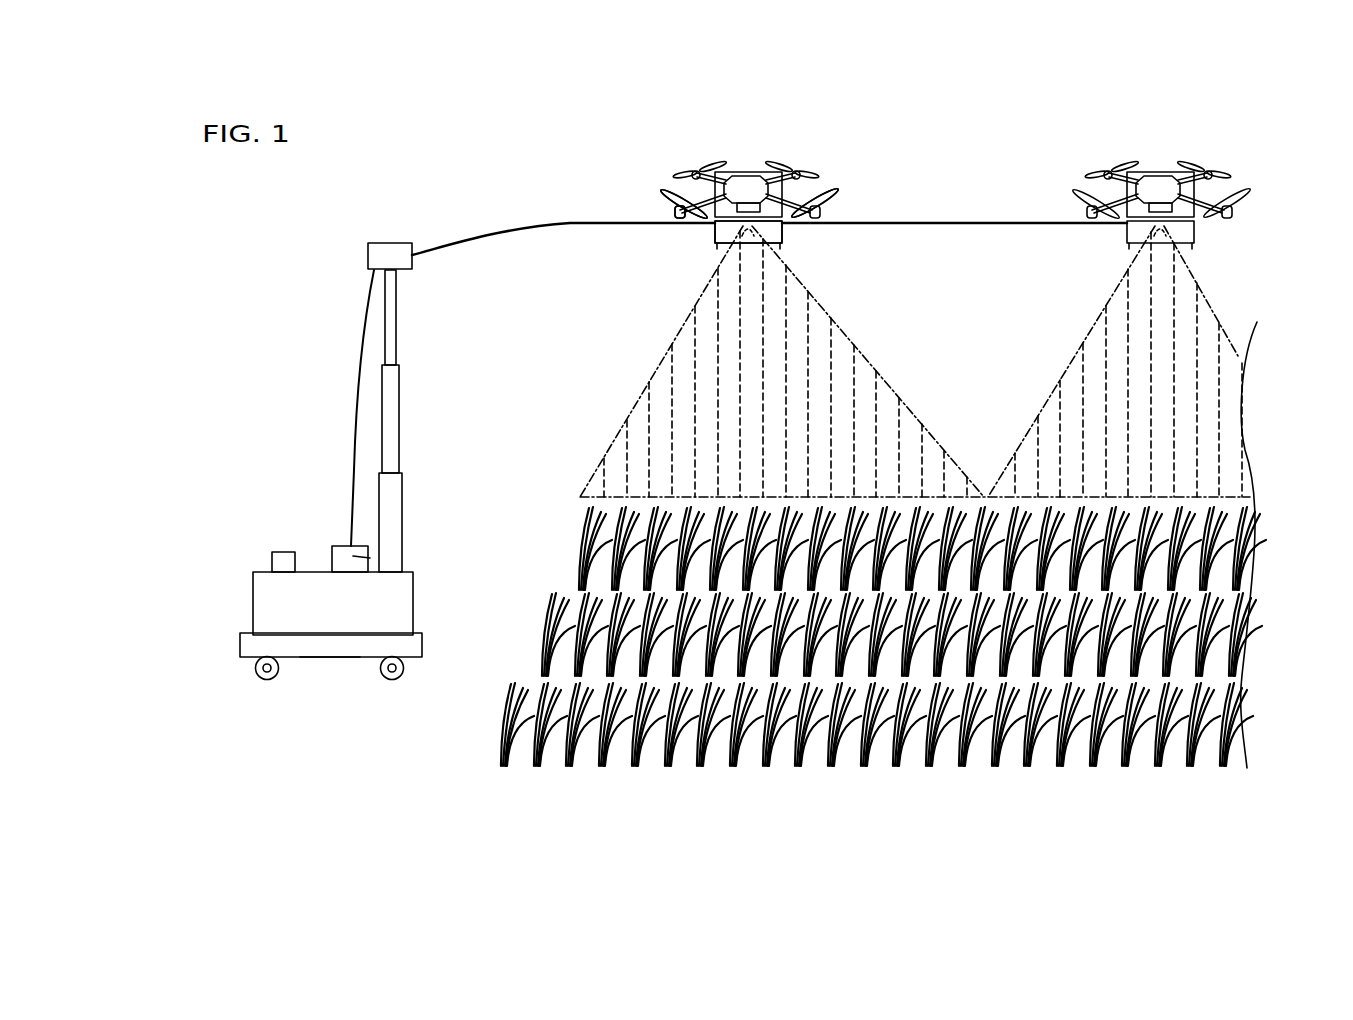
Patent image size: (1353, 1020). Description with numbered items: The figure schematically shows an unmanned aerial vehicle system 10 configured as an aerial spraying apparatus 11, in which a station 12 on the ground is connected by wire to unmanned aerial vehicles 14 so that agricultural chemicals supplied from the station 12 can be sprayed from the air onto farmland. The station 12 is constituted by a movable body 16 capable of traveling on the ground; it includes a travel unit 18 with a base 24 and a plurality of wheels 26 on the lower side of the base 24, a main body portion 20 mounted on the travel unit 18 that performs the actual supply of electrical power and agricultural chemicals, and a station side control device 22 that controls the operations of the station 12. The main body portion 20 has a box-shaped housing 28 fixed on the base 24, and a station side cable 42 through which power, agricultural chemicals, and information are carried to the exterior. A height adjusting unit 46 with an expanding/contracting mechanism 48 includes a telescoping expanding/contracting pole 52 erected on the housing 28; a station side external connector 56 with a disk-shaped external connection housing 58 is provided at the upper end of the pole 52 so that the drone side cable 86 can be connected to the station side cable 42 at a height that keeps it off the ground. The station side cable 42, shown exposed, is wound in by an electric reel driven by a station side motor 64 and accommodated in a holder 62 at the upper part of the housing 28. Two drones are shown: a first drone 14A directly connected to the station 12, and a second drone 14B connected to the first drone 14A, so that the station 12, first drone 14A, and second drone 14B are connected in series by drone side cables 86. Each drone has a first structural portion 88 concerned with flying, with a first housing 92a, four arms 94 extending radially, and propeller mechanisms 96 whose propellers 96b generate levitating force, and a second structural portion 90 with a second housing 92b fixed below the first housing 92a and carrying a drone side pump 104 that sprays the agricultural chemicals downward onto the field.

The unmanned aerial vehicle system 10 is at (702, 434).
The aerial spraying apparatus 11 is at (702, 434).
The station 12 is at (326, 487).
The unmanned aerial vehicles 14 is at (921, 187).
The first drone 14A is at (735, 187).
The second drone 14B is at (1170, 159).
The movable body 16 is at (332, 670).
The travel unit 18 is at (280, 668).
The main body portion 20 is at (413, 612).
The station side control device 22 is at (283, 552).
The base 24 is at (240, 642).
The wheels 26 is at (254, 673).
The housing 28 is at (384, 603).
The station side cable 42 is at (355, 395).
The height adjusting unit 46 is at (415, 389).
The expanding/contracting mechanism 48 is at (403, 493).
The expanding/contracting pole 52 is at (438, 522).
The station side external connector 56 is at (378, 255).
The external connection housing 58 is at (343, 256).
The holder 62 is at (342, 548).
The station side motor 64 is at (353, 560).
The drone side cable 86 is at (508, 238).
The first structural portion 88 is at (742, 178).
The second structural portion 90 is at (686, 247).
The first housing 92a is at (740, 182).
The second housing 92b is at (710, 231).
The arms 94 is at (797, 203).
The propeller mechanisms 96 is at (672, 212).
The propellers 96b is at (663, 193).
The drone side pump 104 is at (765, 245).